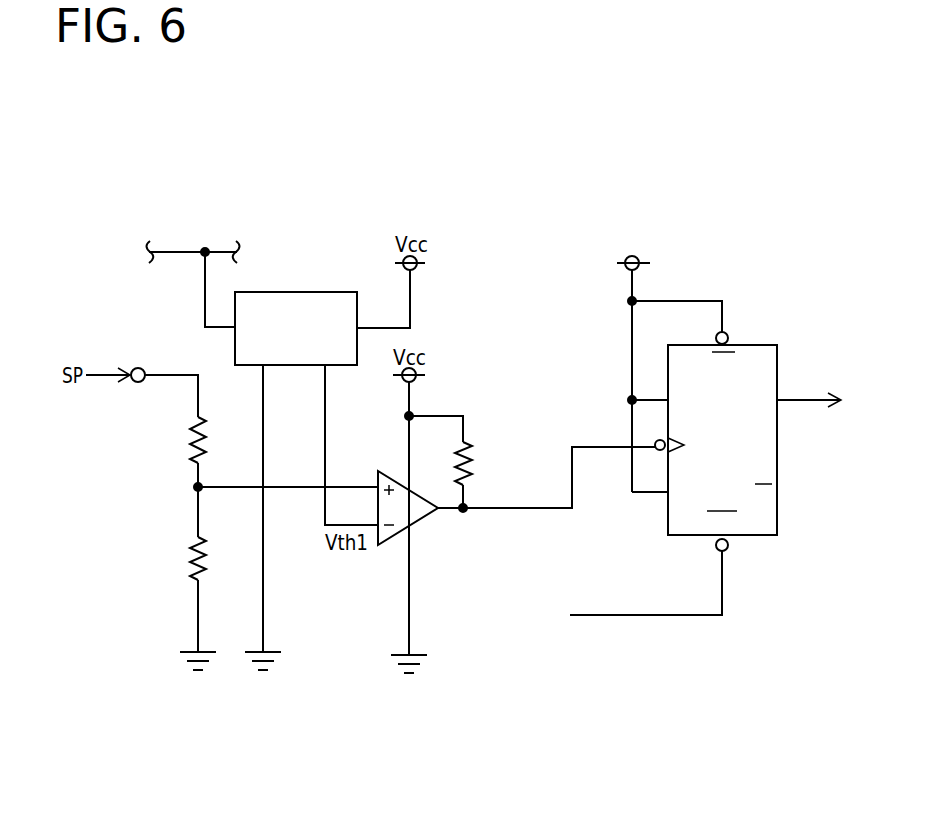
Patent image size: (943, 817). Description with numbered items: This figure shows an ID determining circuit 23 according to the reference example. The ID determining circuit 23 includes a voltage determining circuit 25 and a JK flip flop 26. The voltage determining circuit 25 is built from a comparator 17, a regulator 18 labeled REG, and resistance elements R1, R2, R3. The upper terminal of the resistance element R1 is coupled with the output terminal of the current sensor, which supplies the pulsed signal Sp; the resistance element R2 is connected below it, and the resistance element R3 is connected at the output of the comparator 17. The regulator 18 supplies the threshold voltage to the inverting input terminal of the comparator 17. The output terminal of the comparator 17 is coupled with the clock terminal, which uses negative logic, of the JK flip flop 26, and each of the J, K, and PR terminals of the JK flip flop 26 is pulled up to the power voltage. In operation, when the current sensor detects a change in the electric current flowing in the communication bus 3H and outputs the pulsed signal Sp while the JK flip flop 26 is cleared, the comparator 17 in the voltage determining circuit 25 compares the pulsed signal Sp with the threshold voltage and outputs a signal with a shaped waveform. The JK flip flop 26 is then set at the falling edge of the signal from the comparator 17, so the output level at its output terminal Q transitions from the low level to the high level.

The communication bus 3H is at (170, 250).
The regulator 18 is at (330, 292).
The comparator 17 is at (422, 521).
The voltage determining circuit 25 is at (473, 414).
The resistance element R1 is at (186, 436).
The resistance element R2 is at (186, 553).
The resistance element R3 is at (476, 457).
The ID determining circuit 23 is at (553, 302).
The JK flip flop 26 is at (755, 345).